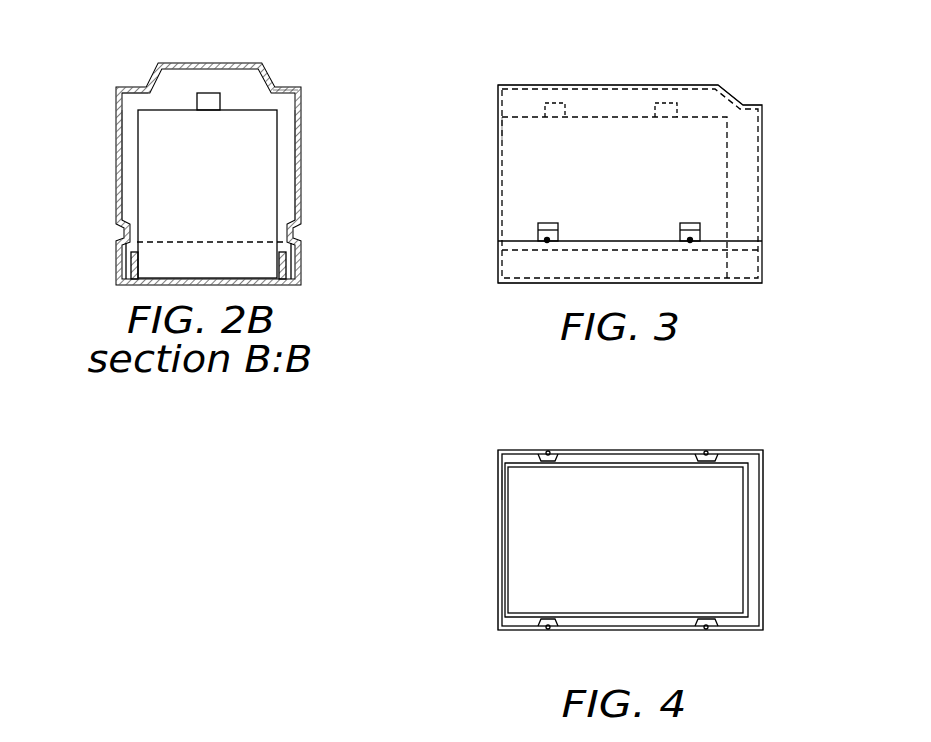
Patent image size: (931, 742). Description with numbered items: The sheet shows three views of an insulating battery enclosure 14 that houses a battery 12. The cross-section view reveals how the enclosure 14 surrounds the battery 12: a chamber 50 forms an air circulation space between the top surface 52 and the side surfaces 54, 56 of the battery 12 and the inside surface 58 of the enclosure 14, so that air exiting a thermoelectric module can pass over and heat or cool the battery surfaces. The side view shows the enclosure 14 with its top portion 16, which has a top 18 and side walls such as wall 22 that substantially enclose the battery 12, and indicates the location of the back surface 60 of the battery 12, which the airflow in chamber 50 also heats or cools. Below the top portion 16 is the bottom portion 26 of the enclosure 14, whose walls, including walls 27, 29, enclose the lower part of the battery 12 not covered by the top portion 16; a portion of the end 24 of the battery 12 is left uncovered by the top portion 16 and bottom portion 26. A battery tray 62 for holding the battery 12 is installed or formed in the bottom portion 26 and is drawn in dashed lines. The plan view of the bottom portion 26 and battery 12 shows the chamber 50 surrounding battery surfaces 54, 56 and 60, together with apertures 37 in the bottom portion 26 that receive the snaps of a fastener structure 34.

In FIG. 2B, the battery 12 is at (221, 186).
In FIG. 3, the battery 12 is at (630, 199).
In FIG. 4, the battery 12 is at (587, 601).
In FIG. 3, the enclosure 14 is at (772, 170).
In FIG. 3, the top portion 16 is at (763, 112).
In FIG. 3, the top 18 is at (596, 85).
In FIG. 3, the wall 22 is at (498, 177).
In FIG. 3, the end 24 is at (502, 125).
In FIG. 4, the end 24 is at (503, 488).
In FIG. 3, the bottom portion 26 is at (763, 267).
In FIG. 4, the bottom portion 26 is at (780, 577).
In FIG. 4, the wall 27 is at (765, 590).
In FIG. 4, the wall 29 is at (498, 533).
In FIG. 2B, the fastener structure 34 is at (304, 232).
In FIG. 3, the fastener structure 34 is at (690, 242).
In FIG. 4, the apertures 37 is at (548, 453).
In FIG. 2B, the chamber 50 is at (235, 80).
In FIG. 3, the chamber 50 is at (742, 182).
In FIG. 4, the chamber 50 is at (757, 465).
In FIG. 2B, the top surface 52 is at (274, 108).
In FIG. 2B, the side surface 54 is at (278, 158).
In FIG. 4, the side surface 54 is at (633, 617).
In FIG. 2B, the side surface 56 is at (138, 155).
In FIG. 4, the side surface 56 is at (622, 462).
In FIG. 2B, the inside surface 58 is at (130, 101).
In FIG. 3, the back surface 60 is at (727, 147).
In FIG. 4, the back surface 60 is at (748, 500).
In FIG. 3, the battery tray 62 is at (542, 252).